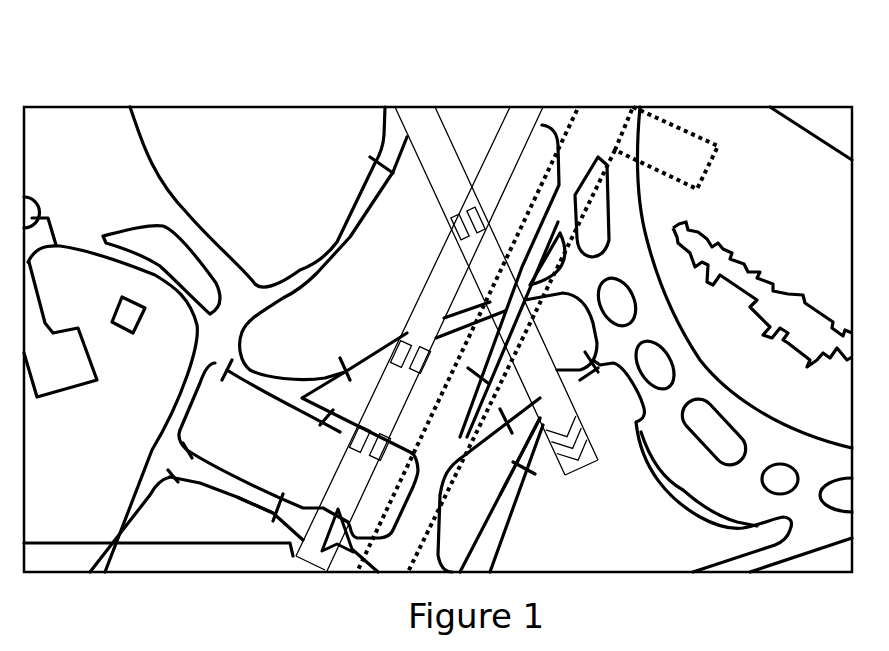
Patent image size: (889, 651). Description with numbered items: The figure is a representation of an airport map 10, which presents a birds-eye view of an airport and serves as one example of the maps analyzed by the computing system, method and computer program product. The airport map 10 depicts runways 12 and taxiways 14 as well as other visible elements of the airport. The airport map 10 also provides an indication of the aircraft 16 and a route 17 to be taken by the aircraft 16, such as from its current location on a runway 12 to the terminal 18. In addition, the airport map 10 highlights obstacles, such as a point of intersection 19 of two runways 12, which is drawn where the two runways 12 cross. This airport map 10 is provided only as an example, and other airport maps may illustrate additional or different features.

The airport map 10 is at (743, 90).
The runway 12 is at (508, 142).
The taxiway 14 is at (236, 498).
The aircraft 16 is at (331, 556).
The route 17 is at (575, 118).
The terminal 18 is at (813, 158).
The point of intersection 19 is at (467, 213).